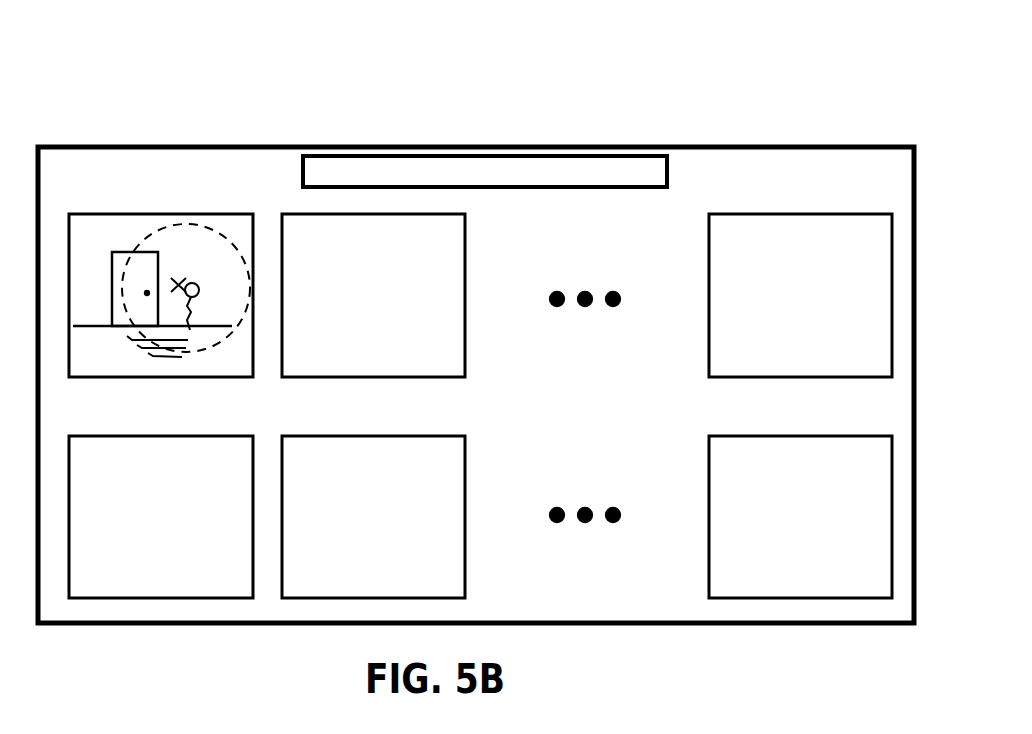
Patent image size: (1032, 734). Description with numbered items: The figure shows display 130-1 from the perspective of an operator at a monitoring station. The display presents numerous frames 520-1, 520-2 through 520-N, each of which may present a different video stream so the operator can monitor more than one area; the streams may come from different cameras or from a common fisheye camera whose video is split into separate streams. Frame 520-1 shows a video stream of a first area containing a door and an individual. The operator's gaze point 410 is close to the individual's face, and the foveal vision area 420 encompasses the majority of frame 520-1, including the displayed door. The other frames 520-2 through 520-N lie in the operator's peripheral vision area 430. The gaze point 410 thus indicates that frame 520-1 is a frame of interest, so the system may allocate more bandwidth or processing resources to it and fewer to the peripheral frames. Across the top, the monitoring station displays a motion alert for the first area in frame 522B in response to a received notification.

The display 130-1 is at (276, 146).
The frame 522B is at (686, 168).
The frame 520-1 is at (145, 251).
The frame 520-2 is at (375, 378).
The frame 520-N is at (709, 517).
The peripheral vision area 430 is at (573, 373).
The foveal vision area 420 is at (137, 235).
The gaze point 410 is at (185, 252).